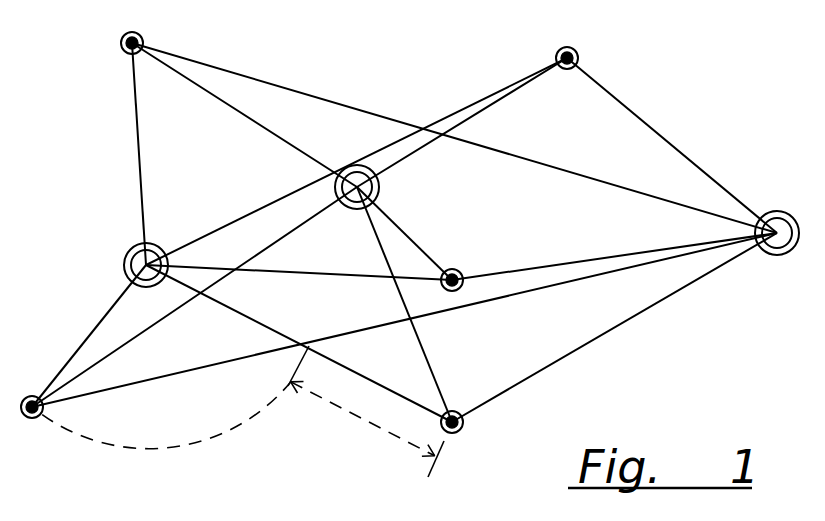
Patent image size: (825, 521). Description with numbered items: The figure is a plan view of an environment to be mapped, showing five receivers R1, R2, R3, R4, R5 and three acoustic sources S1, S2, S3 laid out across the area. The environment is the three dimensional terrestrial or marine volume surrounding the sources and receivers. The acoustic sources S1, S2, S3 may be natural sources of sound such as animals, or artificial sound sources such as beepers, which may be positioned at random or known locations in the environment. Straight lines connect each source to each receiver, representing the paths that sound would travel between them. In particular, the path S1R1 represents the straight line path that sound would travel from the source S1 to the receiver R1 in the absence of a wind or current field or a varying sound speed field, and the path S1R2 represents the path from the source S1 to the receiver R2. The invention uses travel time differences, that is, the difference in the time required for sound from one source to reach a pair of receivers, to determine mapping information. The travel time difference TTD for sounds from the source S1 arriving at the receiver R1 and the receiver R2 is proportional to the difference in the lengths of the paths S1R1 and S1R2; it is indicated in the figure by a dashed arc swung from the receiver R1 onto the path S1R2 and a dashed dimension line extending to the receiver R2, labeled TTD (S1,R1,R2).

The acoustic source S1 is at (124, 265).
The acoustic source S2 is at (769, 254).
The acoustic source S3 is at (383, 187).
The receiver R1 is at (33, 431).
The receiver R2 is at (476, 427).
The receiver R3 is at (470, 263).
The receiver R4 is at (571, 40).
The receiver R5 is at (134, 28).
The path S1R1 is at (72, 358).
The path S1R2 is at (242, 315).
The travel time difference TTD is at (380, 428).